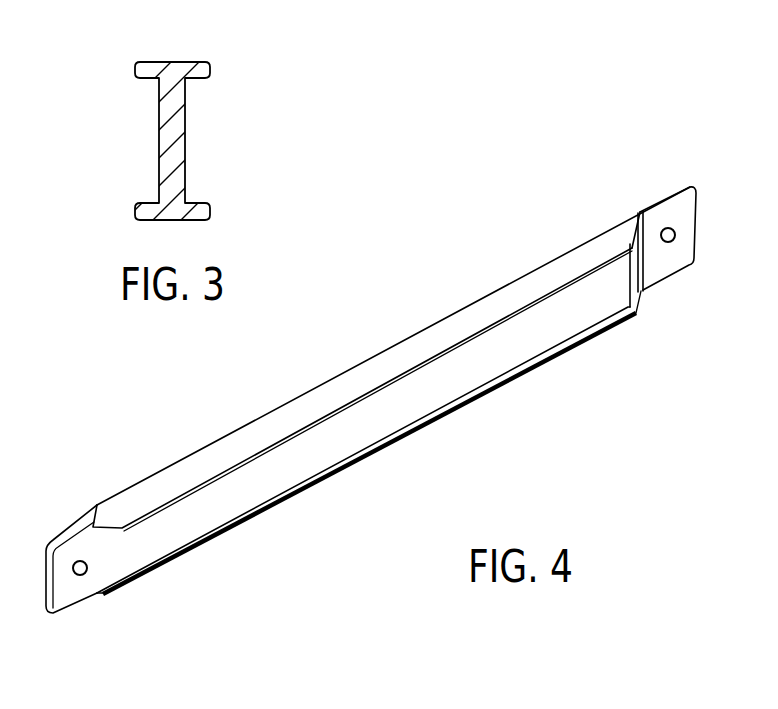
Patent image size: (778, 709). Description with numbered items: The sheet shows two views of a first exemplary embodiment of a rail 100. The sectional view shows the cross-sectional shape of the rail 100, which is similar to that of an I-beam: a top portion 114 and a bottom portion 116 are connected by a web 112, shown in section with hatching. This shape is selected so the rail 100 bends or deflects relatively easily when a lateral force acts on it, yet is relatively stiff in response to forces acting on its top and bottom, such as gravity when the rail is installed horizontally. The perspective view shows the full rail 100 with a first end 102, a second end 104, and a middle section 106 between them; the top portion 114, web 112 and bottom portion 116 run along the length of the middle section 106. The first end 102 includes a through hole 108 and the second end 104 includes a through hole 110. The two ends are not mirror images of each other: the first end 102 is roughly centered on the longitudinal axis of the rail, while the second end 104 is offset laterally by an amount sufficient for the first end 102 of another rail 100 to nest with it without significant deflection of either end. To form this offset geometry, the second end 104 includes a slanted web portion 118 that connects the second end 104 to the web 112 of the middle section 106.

In FIG. 4, the rail 100 is at (577, 443).
In FIG. 4, the first end 102 is at (73, 549).
In FIG. 4, the second end 104 is at (679, 224).
In FIG. 4, the middle section 106 is at (312, 515).
In FIG. 4, the through hole 108 is at (82, 576).
In FIG. 4, the through hole 110 is at (674, 241).
In FIG. 3, the web 112 is at (186, 147).
In FIG. 4, the web 112 is at (336, 452).
In FIG. 3, the top portion 114 is at (209, 64).
In FIG. 4, the top portion 114 is at (388, 365).
In FIG. 3, the bottom portion 116 is at (210, 215).
In FIG. 4, the bottom portion 116 is at (438, 414).
In FIG. 4, the slanted web portion 118 is at (638, 282).